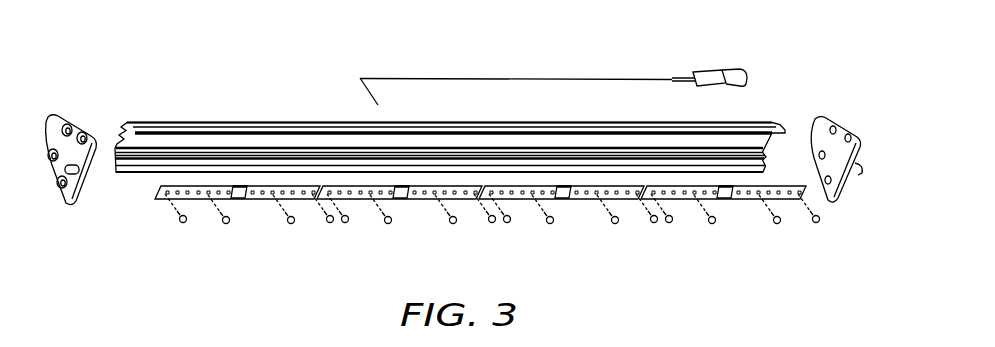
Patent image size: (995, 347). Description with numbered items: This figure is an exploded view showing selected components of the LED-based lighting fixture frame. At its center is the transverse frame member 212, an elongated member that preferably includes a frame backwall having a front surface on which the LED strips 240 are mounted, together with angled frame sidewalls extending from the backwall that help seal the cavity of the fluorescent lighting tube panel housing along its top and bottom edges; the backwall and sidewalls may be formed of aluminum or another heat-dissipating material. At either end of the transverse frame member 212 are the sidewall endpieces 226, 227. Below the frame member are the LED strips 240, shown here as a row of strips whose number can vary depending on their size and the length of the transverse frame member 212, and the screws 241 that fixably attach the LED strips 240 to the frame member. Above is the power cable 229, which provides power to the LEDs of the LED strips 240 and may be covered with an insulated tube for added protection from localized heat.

The transverse frame member 212 is at (192, 121).
The sidewall endpiece 226 is at (78, 126).
The sidewall endpiece 227 is at (820, 117).
The power cable 229 is at (517, 78).
The LED strips 240 is at (262, 203).
The screws 241 is at (329, 224).